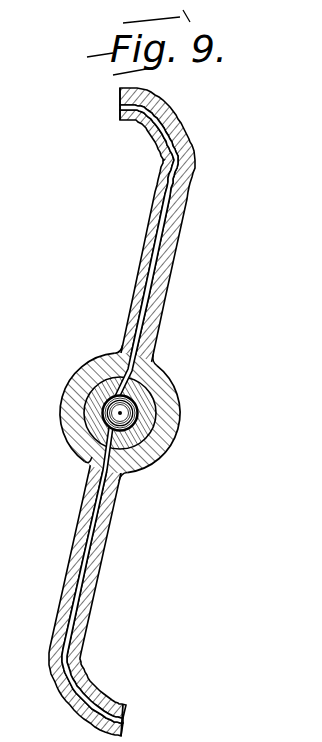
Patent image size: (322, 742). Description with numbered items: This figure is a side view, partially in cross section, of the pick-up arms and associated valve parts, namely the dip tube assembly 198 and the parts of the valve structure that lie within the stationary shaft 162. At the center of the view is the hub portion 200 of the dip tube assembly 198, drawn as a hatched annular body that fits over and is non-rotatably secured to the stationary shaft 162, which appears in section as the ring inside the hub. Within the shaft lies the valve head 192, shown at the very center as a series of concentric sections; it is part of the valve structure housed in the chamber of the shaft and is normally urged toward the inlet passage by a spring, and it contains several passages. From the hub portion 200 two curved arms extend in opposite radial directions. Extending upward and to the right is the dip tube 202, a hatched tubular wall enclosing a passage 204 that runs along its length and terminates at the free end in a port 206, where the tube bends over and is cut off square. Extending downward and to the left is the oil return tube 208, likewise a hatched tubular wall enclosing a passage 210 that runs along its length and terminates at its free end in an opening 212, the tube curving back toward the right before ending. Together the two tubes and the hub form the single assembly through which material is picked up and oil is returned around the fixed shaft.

The stationary shaft 162 is at (150, 421).
The valve head 192 is at (103, 424).
The dip tube assembly 198 is at (158, 473).
The hub portion 200 is at (165, 386).
The dip tube 202 is at (163, 252).
The passage 204 is at (170, 211).
The port 206 is at (121, 103).
The oil return tube 208 is at (68, 610).
The passage 210 is at (92, 567).
The opening 212 is at (123, 714).